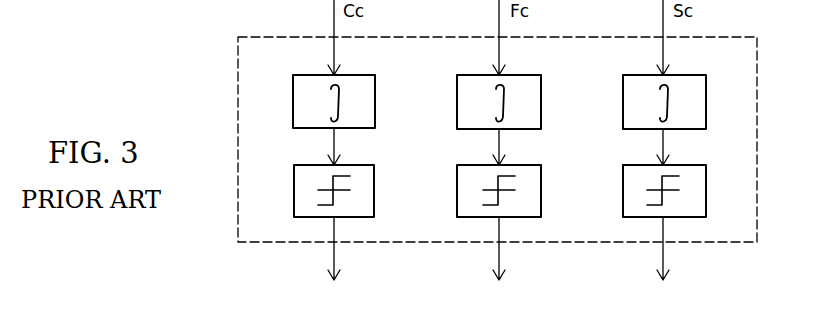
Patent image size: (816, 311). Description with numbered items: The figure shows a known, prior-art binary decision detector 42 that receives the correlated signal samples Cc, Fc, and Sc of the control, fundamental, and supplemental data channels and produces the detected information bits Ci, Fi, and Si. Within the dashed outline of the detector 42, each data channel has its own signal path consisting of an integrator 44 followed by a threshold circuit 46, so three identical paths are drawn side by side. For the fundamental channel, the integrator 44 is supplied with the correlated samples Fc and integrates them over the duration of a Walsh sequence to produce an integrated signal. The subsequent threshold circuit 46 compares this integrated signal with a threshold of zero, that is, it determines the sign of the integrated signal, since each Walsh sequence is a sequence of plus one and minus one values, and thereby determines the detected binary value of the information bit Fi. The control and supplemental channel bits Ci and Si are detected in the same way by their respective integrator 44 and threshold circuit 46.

The detector 42 is at (241, 94).
The integrator 44 is at (367, 105).
The threshold circuit 46 is at (367, 192).